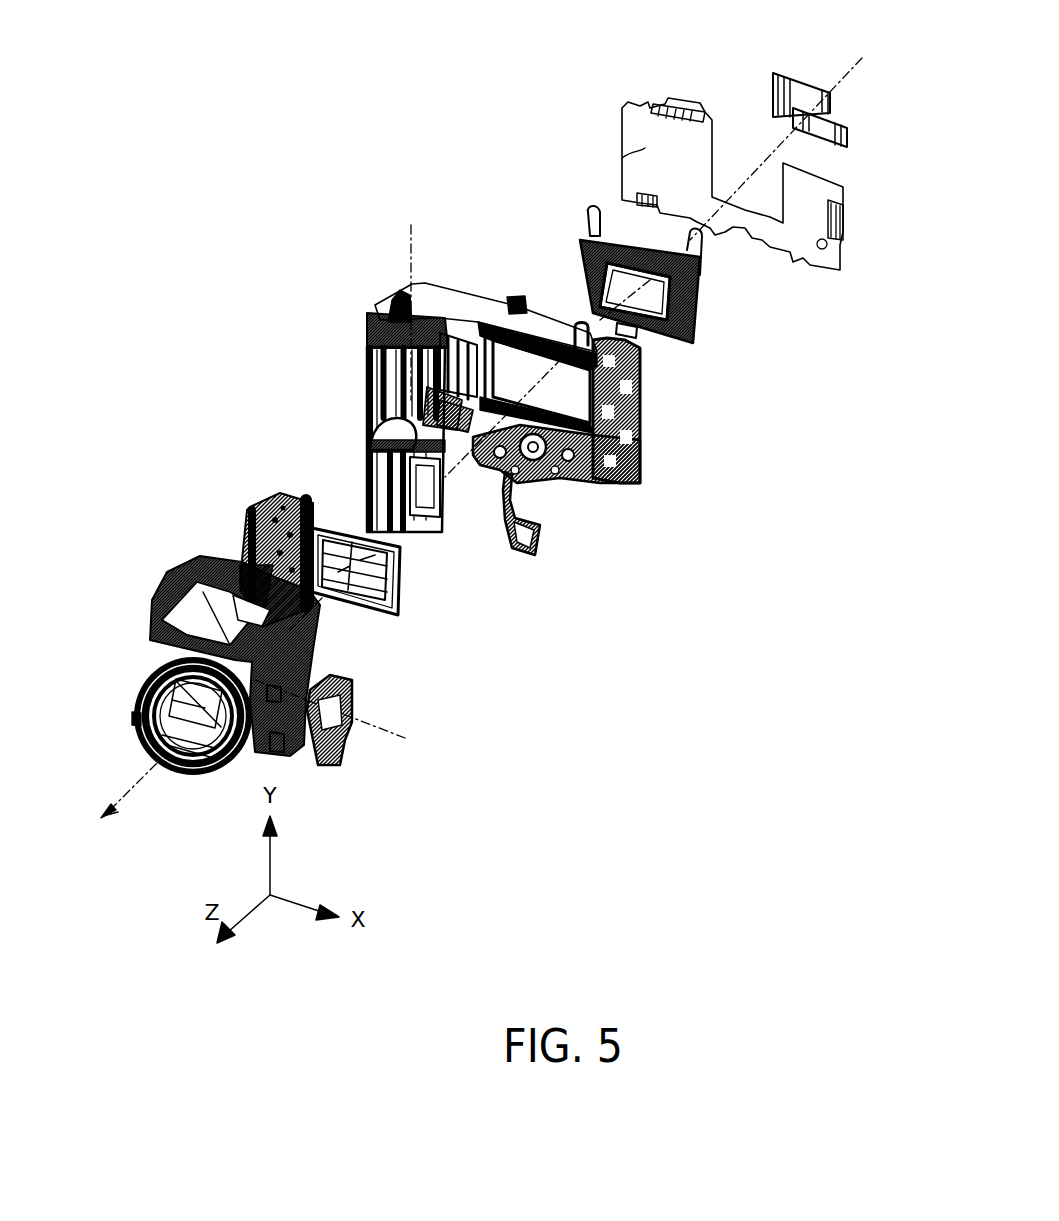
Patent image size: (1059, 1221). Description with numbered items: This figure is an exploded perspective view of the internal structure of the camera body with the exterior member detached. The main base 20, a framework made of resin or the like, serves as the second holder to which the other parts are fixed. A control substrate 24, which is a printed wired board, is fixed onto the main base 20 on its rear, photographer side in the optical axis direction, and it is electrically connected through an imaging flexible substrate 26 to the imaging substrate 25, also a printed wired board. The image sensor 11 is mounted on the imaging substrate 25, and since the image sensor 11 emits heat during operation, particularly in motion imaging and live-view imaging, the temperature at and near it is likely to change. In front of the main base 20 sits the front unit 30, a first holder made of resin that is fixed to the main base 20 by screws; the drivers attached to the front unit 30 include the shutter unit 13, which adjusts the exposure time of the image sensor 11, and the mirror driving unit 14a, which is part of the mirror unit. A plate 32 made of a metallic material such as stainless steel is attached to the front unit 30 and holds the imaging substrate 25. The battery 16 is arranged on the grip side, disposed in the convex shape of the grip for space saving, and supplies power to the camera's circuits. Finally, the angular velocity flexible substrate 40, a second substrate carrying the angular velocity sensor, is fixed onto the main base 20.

The image sensor 11 is at (697, 335).
The imaging substrate 25 is at (677, 343).
The shutter unit 13 is at (250, 490).
The mirror driving unit 14a is at (347, 722).
The battery 16 is at (357, 473).
The main base 20 is at (640, 440).
The control substrate 24 is at (622, 157).
The imaging flexible substrate 26 is at (773, 109).
The front unit 30 is at (148, 654).
The plate 32 is at (630, 288).
The angular velocity flexible substrate 40 is at (520, 513).